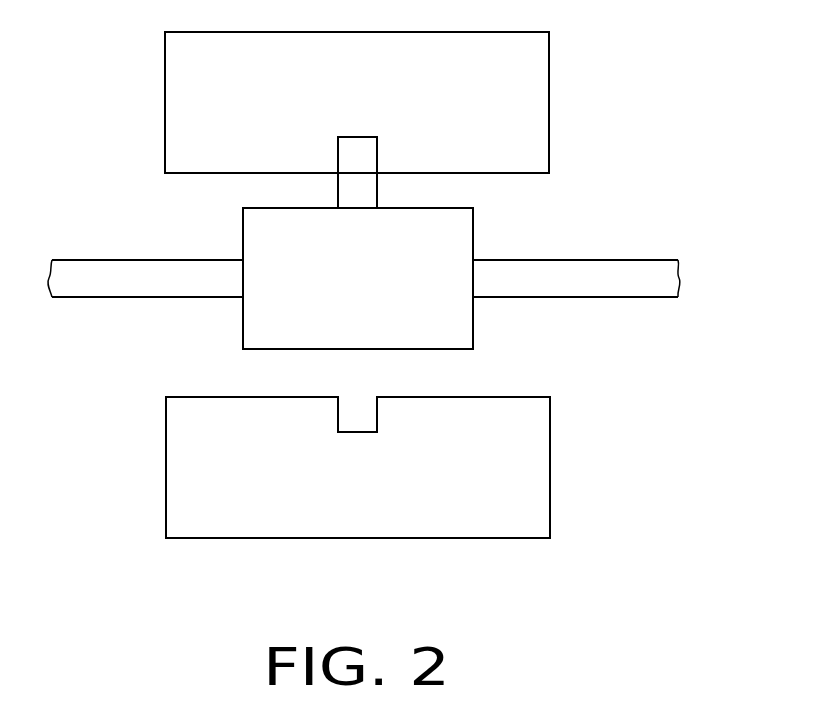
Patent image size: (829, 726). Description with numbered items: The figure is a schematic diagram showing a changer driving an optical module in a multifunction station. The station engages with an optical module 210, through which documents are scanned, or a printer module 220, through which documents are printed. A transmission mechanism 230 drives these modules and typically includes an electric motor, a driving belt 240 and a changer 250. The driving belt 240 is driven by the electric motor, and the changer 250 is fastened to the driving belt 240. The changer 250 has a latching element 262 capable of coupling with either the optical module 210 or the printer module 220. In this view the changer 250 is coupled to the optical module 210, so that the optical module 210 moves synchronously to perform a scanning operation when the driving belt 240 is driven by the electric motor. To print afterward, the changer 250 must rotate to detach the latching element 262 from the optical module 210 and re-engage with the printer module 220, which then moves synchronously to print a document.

The optical module 210 is at (532, 106).
The printer module 220 is at (535, 474).
The transmission mechanism 230 is at (715, 158).
The driving belt 240 is at (597, 272).
The changer 250 is at (452, 238).
The latching element 262 is at (347, 191).